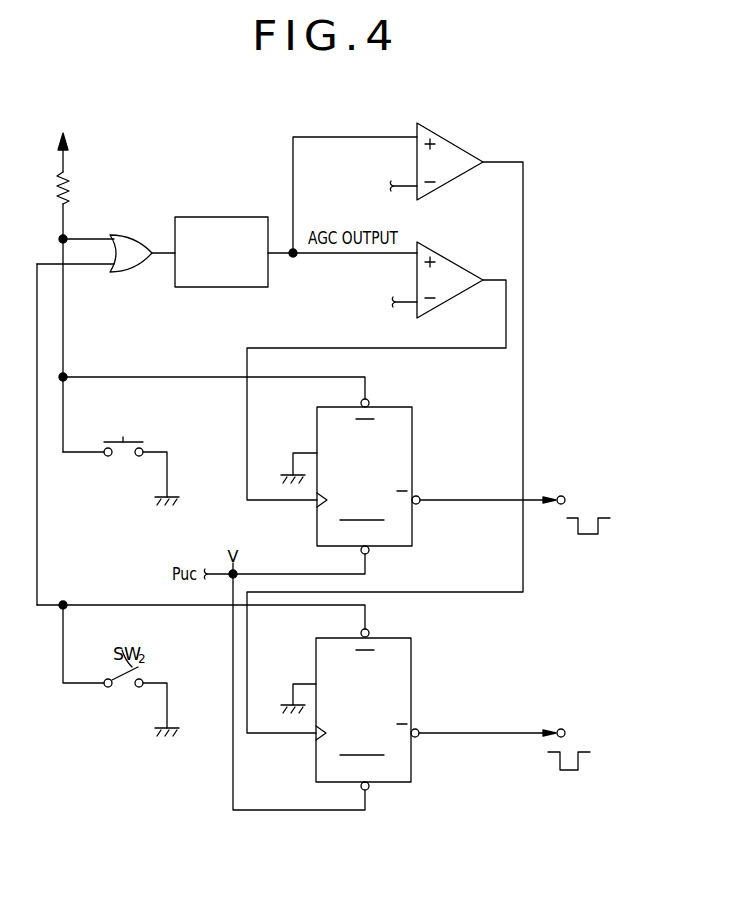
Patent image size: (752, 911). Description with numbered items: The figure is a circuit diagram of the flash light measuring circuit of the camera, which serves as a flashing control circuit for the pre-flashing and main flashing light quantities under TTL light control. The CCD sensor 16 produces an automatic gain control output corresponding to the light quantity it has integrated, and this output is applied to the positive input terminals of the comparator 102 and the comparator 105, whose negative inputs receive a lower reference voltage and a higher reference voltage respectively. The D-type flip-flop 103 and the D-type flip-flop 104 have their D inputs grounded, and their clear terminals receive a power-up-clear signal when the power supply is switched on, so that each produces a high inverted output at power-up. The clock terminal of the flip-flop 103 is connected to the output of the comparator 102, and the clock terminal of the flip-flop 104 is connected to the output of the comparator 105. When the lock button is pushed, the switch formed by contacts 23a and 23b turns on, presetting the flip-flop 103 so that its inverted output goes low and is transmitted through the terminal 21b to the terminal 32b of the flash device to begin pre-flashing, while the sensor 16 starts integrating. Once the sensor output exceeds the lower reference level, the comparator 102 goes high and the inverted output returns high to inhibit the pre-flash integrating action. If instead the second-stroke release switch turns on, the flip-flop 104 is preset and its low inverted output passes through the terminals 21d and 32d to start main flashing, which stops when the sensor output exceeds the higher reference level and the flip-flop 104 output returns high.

The CCD sensor 16 is at (255, 217).
The comparator 105 is at (455, 143).
The comparator 102 is at (455, 262).
The D-type flip-flop 103 is at (412, 428).
The D-type flip-flop 104 is at (411, 655).
The switch contact 23a is at (147, 440).
The switch contact 23b is at (108, 457).
The terminal 21b is at (594, 469).
The terminal of the flash device 32b is at (594, 497).
The terminal 21d is at (590, 699).
The terminal of the flash device 32d is at (584, 730).